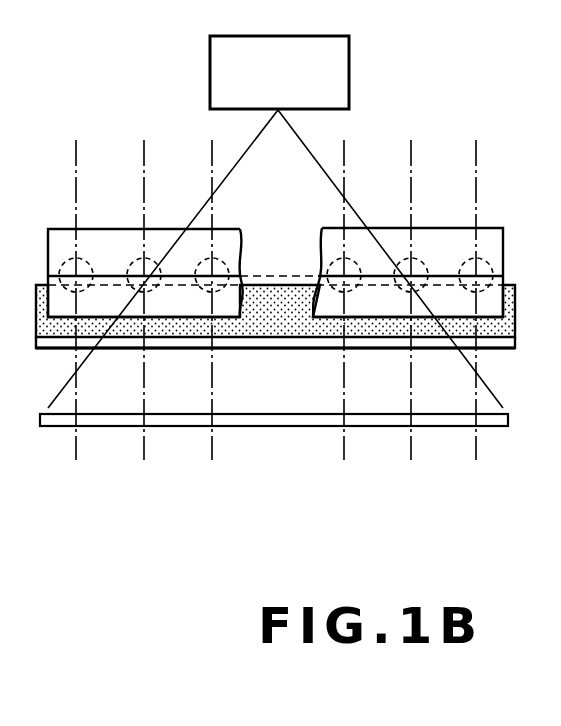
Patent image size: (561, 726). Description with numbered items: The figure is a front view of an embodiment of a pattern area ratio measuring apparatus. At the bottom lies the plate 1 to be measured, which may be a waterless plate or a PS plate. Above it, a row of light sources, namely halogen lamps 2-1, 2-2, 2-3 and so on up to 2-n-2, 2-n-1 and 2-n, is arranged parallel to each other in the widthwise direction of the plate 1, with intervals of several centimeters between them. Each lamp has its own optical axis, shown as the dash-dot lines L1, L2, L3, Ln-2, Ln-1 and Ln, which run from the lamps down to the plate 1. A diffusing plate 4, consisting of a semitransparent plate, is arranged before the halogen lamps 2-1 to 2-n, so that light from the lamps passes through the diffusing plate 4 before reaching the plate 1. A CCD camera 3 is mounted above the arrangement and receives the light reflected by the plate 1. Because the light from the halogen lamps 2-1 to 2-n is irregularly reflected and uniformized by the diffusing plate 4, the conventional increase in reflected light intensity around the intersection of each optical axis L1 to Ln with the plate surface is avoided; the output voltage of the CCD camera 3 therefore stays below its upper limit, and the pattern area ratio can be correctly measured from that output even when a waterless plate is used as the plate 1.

The plate to be measured 1 is at (276, 412).
The light source (halogen lamp) 2-1 is at (72, 258).
The light source (halogen lamp) 2-2 is at (140, 258).
The light source (halogen lamp) 2-3 is at (209, 258).
The light source (halogen lamp) 2-n-2 is at (352, 259).
The light source (halogen lamp) 2-n-1 is at (418, 259).
The light source (halogen lamp) 2-n is at (483, 259).
The CCD camera 3 is at (349, 54).
The diffusing plate 4 is at (281, 310).
The optical axis L1 is at (78, 317).
The optical axis L2 is at (145, 317).
The optical axis L3 is at (213, 317).
The optical axis Ln-2 is at (337, 317).
The optical axis Ln-1 is at (412, 317).
The optical axis Ln is at (473, 317).